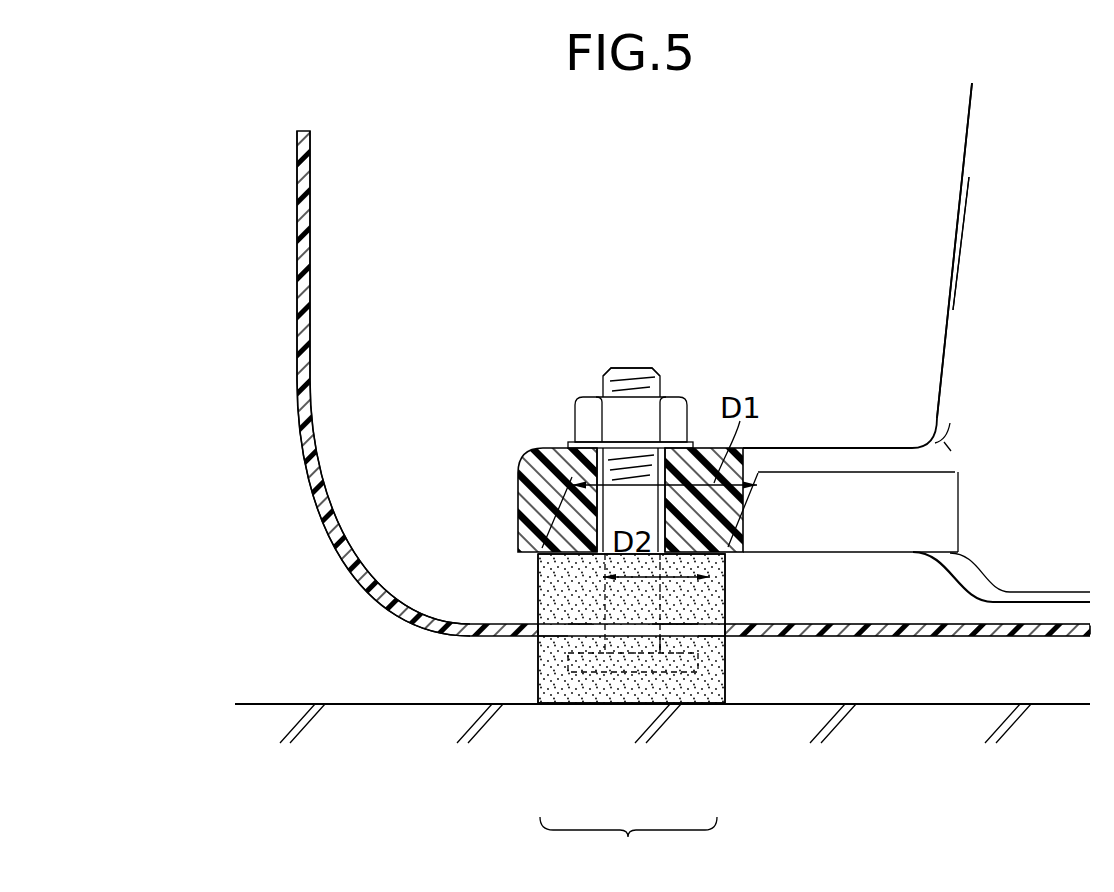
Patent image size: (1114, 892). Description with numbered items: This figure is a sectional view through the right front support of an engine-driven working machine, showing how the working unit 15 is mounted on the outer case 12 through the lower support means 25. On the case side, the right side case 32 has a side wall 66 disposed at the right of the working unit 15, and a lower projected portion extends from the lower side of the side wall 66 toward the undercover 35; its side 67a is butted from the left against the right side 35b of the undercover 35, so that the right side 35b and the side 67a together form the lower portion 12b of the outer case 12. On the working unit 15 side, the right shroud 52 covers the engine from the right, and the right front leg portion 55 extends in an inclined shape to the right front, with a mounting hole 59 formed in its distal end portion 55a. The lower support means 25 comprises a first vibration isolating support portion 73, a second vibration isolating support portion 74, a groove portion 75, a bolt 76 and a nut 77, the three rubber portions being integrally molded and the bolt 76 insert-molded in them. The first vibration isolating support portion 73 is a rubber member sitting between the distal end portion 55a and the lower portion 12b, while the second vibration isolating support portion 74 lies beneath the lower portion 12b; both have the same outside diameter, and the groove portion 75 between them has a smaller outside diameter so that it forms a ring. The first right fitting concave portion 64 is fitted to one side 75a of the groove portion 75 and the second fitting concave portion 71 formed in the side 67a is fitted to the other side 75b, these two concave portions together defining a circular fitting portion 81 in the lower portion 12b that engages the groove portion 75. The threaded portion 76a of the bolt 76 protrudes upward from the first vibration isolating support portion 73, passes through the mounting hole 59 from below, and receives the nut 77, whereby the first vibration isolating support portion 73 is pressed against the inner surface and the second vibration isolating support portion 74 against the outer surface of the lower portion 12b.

The outer case 12 is at (290, 222).
The lower portion 12b is at (706, 640).
The working unit 15 is at (968, 92).
The lower support means 25 is at (536, 576).
The right side case 32 is at (297, 333).
The undercover 35 is at (950, 640).
The right side 35b is at (725, 640).
The right shroud 52 is at (969, 172).
The right front leg portion 55 is at (838, 480).
The distal end portion 55a is at (518, 475).
The mounting hole 59 is at (672, 522).
The first right fitting concave portion 64 is at (668, 640).
The side wall 66 is at (310, 292).
The side 67a is at (550, 640).
The second fitting concave portion 71 is at (590, 650).
The first vibration isolating support portion 73 is at (718, 579).
The second vibration isolating support portion 74 is at (718, 677).
The groove portion 75 is at (628, 632).
The one side 75a is at (652, 630).
The other side 75b is at (592, 632).
The bolt 76 is at (612, 522).
The threaded portion 76a is at (634, 366).
The nut 77 is at (587, 418).
The fitting portion 81 is at (628, 844).